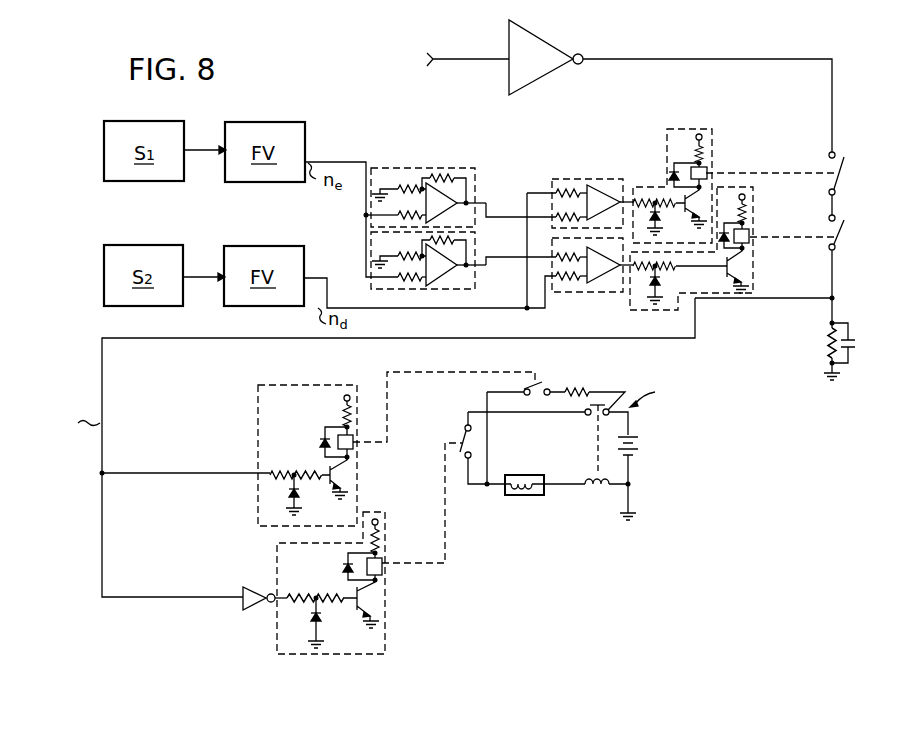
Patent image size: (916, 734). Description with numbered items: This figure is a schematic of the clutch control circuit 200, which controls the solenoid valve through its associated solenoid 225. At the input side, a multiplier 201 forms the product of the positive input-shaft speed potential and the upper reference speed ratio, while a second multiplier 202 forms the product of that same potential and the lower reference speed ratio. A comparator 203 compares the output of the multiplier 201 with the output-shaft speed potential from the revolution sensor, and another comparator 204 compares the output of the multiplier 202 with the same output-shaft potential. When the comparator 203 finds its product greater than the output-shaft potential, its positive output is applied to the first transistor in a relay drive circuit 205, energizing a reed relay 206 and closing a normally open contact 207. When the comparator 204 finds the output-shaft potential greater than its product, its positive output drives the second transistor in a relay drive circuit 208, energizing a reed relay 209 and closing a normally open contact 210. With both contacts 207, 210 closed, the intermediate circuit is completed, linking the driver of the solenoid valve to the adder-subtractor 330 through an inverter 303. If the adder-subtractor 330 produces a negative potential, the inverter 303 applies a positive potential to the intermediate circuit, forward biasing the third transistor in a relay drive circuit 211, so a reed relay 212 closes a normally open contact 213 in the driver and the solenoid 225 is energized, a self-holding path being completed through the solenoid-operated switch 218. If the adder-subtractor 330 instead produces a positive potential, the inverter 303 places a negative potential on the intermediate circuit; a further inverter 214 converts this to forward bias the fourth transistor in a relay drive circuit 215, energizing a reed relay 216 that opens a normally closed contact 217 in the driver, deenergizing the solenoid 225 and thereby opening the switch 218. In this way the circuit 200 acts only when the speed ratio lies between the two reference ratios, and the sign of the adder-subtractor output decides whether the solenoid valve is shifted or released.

The clutch control circuit 200 is at (383, 118).
The multiplier 201 is at (395, 167).
The multiplier 202 is at (472, 283).
The comparator 203 is at (580, 178).
The comparator 204 is at (572, 291).
The relay drive circuit 205 is at (683, 139).
The reed relay 206 is at (711, 171).
The normally open contact 207 is at (840, 181).
The relay drive circuit 208 is at (750, 256).
The reed relay 209 is at (744, 232).
The normally open contact 210 is at (840, 235).
The relay drive circuit 211 is at (306, 389).
The reed relay 212 is at (356, 449).
The normally open contact 213 is at (540, 383).
The inverter 214 is at (260, 588).
The relay drive circuit 215 is at (345, 656).
The reed relay 216 is at (384, 558).
The normally closed contact 217 is at (462, 438).
The solenoid-operated switch 218 is at (598, 440).
The solenoid 225 is at (526, 477).
The inverter 303 is at (550, 50).
The adder-subtractor 330 is at (439, 50).